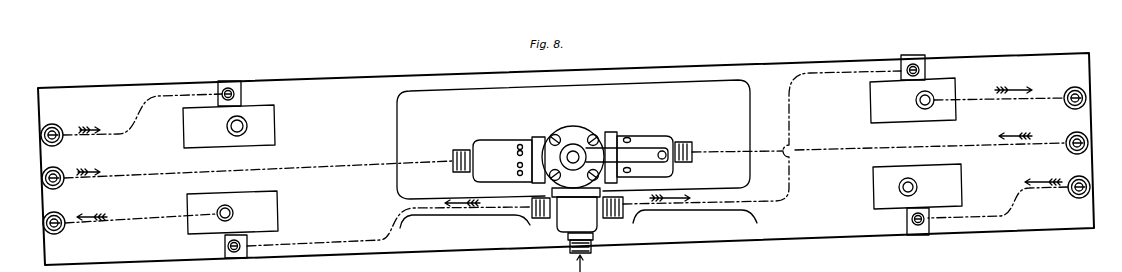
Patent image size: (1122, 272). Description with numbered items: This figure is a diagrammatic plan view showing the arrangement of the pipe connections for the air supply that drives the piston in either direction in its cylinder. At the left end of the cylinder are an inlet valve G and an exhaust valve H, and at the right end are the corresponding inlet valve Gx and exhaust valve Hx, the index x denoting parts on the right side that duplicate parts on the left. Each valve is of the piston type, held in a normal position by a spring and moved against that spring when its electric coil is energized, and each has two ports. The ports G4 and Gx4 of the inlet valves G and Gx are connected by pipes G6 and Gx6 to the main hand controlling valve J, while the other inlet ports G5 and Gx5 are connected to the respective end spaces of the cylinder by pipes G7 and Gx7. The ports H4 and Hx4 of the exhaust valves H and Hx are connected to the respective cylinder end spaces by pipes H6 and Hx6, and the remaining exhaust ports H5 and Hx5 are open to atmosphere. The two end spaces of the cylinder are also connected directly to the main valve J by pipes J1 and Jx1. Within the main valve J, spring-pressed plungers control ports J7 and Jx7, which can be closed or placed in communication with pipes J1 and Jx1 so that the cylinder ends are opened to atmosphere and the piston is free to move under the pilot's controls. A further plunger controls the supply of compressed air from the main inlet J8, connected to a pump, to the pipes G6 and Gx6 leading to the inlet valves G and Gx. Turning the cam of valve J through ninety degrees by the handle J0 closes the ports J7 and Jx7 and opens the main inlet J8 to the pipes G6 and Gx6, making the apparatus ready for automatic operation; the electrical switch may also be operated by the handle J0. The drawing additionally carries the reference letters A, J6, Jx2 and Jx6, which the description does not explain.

The casing A is at (315, 85).
The exhaust valve H is at (262, 110).
The port H4 is at (230, 88).
The port H5 is at (247, 126).
The pipe H6 is at (182, 93).
The inlet valve G is at (260, 223).
The port G4 is at (228, 246).
The port G5 is at (233, 211).
The pipe G6 is at (355, 240).
The pipe G7 is at (152, 217).
The main hand controlling valve J is at (568, 132).
The handle J0 is at (647, 153).
The pipe J1 is at (438, 163).
The cylinder J6 is at (487, 167).
The port J7 is at (517, 143).
The main inlet J8 is at (590, 246).
The pipe Jx1 is at (825, 150).
The ports Jx2 is at (627, 138).
The pipe coupling Jx6 is at (678, 142).
The port Jx7 is at (670, 168).
The inlet valve Gx is at (889, 80).
The port Gx4 is at (922, 55).
The port Gx5 is at (915, 98).
The pipe Gx6 is at (790, 92).
The pipe Gx7 is at (984, 98).
The exhaust valve Hx is at (886, 198).
The port Hx4 is at (916, 227).
The port Hx5 is at (919, 187).
The pipe Hx6 is at (975, 217).